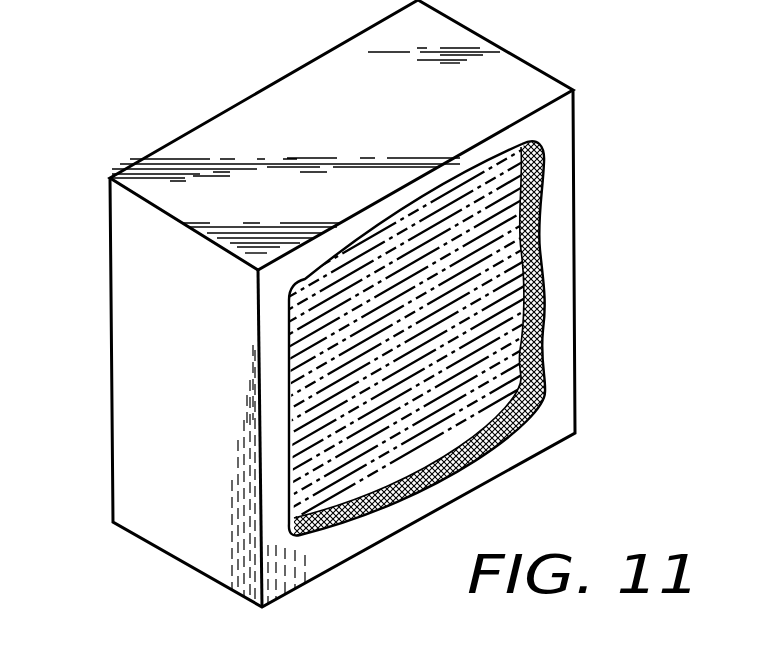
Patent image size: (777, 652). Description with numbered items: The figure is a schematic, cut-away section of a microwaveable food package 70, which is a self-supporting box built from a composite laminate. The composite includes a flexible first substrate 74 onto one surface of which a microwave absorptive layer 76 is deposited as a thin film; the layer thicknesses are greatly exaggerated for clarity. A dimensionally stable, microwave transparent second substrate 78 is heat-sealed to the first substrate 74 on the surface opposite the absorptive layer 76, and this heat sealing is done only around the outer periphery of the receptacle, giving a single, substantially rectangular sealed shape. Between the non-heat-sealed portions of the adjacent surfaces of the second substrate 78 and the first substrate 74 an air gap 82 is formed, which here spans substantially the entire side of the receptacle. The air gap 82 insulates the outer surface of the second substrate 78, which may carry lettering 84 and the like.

The food package 70 is at (562, 37).
The first substrate 74 is at (540, 222).
The microwave absorptive layer 76 is at (540, 260).
The second substrate 78 is at (555, 290).
The air gap 82 is at (505, 367).
The lettering 84 is at (138, 252).